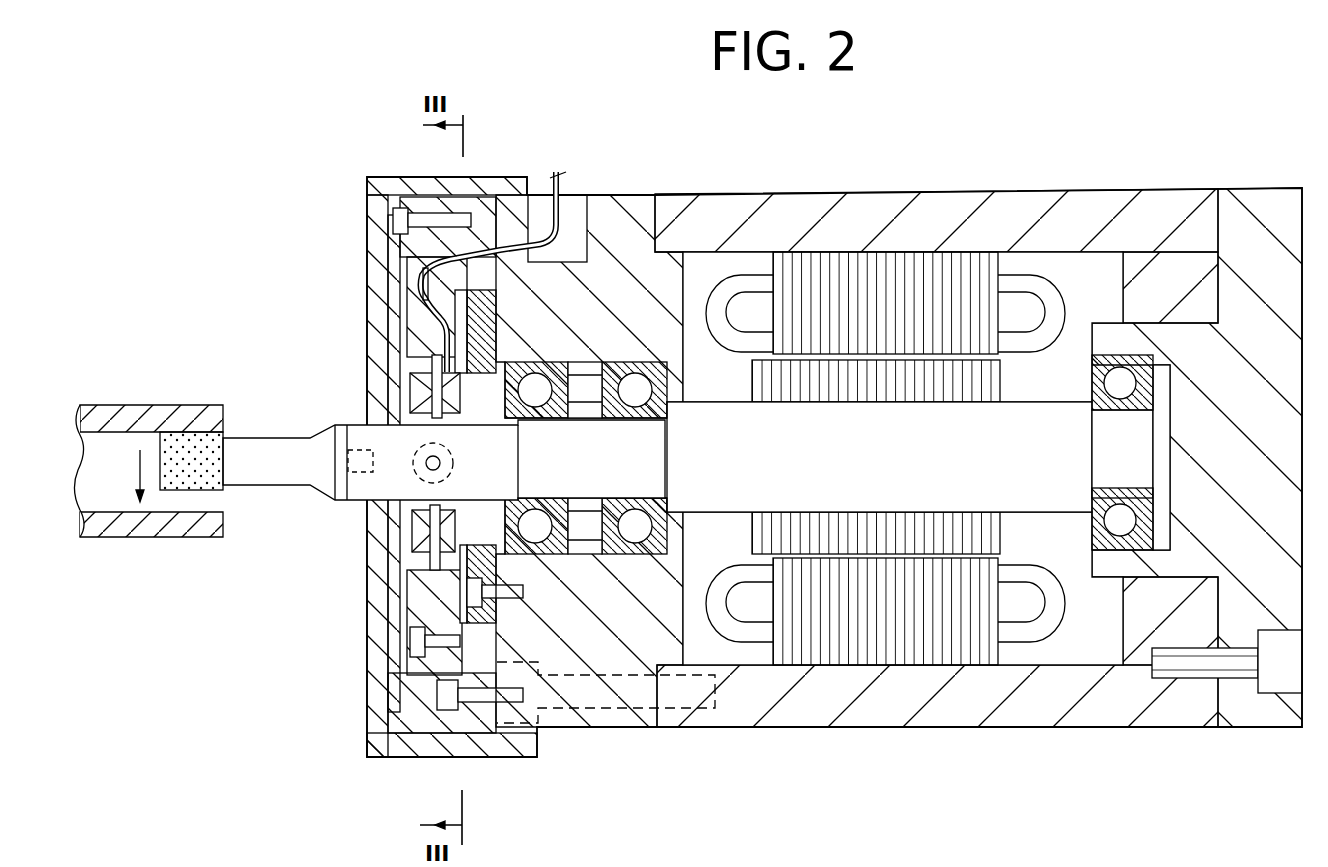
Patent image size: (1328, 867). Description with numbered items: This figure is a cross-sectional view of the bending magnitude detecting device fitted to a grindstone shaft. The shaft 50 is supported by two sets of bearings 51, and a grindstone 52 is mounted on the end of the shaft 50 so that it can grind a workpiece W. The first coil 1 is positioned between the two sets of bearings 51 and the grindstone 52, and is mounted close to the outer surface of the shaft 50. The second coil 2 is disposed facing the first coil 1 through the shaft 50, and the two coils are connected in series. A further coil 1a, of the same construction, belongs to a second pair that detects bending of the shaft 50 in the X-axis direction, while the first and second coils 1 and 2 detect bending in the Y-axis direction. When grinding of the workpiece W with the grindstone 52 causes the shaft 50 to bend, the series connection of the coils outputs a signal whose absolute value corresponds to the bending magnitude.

The first coil 1 is at (407, 400).
The first coil 1a is at (453, 462).
The second coil 2 is at (408, 538).
The shaft 50 is at (880, 461).
The bearings 51 is at (665, 418).
The grindstone 52 is at (183, 478).
The workpiece W is at (125, 405).